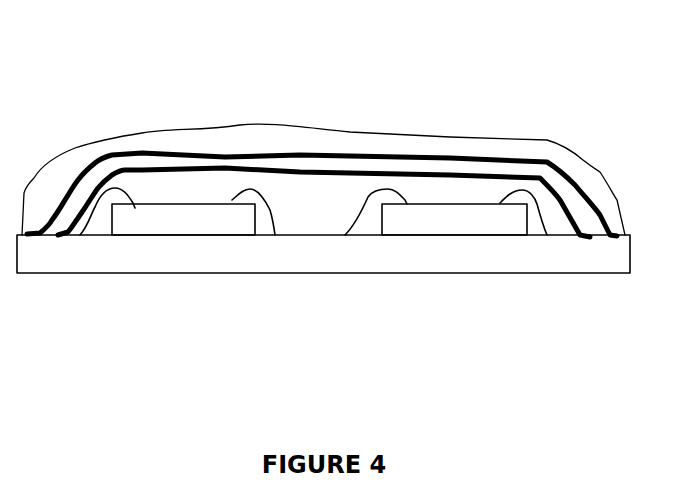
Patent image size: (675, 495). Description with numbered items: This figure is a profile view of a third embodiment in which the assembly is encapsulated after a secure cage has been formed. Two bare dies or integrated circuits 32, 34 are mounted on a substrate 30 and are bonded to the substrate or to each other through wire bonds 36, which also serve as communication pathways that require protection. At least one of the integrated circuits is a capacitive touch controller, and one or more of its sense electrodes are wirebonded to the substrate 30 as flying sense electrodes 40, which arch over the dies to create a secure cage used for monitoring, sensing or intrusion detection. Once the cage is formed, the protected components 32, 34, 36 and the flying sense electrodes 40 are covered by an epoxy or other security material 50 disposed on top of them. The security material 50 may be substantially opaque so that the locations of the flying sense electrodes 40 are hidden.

The substrate 30 is at (195, 285).
The bare die 32 is at (158, 246).
The bare die 34 is at (447, 246).
The wire bonds 36 is at (91, 239).
The flying sense electrodes 40 is at (197, 157).
The security material 50 is at (467, 126).